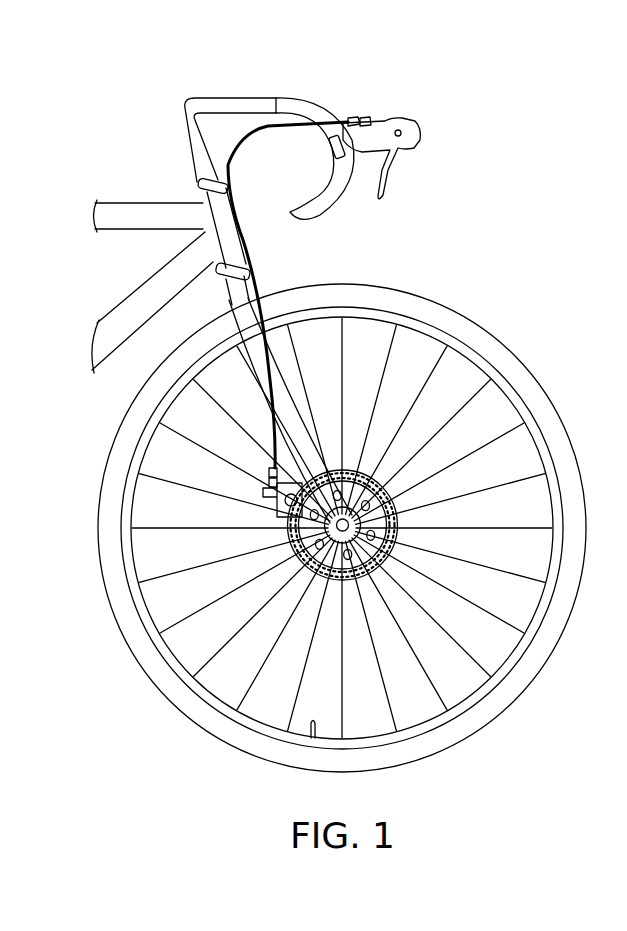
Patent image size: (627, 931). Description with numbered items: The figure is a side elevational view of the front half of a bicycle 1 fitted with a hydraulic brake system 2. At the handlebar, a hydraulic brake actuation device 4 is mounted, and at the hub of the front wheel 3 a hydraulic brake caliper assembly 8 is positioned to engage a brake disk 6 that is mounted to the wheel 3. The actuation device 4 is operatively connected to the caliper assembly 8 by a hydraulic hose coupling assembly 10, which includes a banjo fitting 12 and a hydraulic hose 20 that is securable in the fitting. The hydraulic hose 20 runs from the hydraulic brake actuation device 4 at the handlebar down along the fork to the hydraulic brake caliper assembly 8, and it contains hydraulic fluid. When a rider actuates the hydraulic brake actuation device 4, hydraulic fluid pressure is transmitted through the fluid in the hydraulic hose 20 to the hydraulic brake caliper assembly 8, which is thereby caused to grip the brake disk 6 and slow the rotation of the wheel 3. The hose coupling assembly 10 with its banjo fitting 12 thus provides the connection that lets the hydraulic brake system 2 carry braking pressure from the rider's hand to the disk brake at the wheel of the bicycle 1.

The bicycle 1 is at (536, 104).
The hydraulic brake system 2 is at (455, 264).
The wheel 3 is at (458, 313).
The hydraulic brake actuation device 4 is at (411, 167).
The brake disk 6 is at (378, 468).
The hydraulic brake caliper assembly 8 is at (282, 507).
The hydraulic hose coupling assembly 10 is at (353, 112).
The banjo fitting 12 is at (374, 120).
The hydraulic hose 20 is at (266, 287).